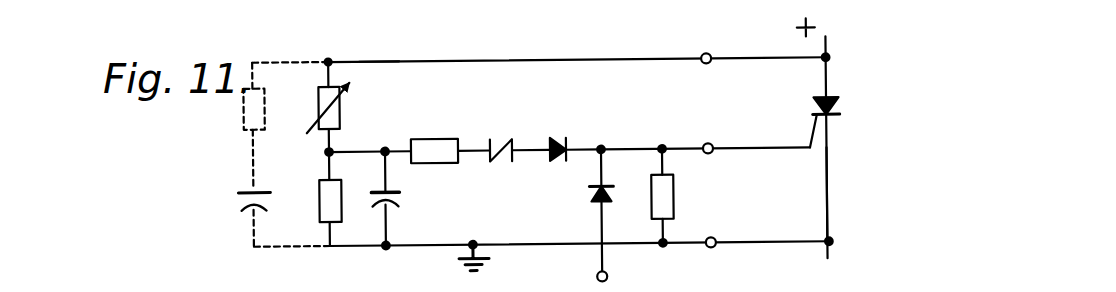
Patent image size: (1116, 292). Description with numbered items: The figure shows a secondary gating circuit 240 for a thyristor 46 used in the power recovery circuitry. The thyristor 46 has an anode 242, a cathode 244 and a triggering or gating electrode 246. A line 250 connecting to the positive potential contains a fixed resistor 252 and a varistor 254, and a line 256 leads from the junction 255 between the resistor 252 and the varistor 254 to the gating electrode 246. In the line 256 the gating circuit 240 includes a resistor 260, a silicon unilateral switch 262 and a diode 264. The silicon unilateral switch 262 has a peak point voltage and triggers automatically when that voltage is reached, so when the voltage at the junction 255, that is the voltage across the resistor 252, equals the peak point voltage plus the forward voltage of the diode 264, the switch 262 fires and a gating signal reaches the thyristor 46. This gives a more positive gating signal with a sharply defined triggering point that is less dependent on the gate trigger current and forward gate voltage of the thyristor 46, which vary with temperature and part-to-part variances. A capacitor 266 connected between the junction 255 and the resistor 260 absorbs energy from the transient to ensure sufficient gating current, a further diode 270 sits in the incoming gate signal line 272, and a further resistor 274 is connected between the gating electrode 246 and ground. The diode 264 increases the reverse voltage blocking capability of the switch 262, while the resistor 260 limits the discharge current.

The gating circuit 240 is at (380, 55).
The line 250 is at (417, 60).
The varistor 254 is at (318, 88).
The junction 255 is at (326, 151).
The fixed resistor 252 is at (328, 214).
The capacitor 266 is at (402, 195).
The resistor 260 is at (427, 138).
The silicon unilateral switch 262 is at (500, 139).
The diode 264 is at (558, 138).
The further diode 270 is at (589, 192).
The incoming gate signal line 272 is at (597, 256).
The further resistor 274 is at (668, 198).
The line 256 is at (731, 145).
The gating electrode 246 is at (812, 126).
The thyristor 46 is at (852, 116).
The anode 242 is at (829, 70).
The cathode 244 is at (830, 196).